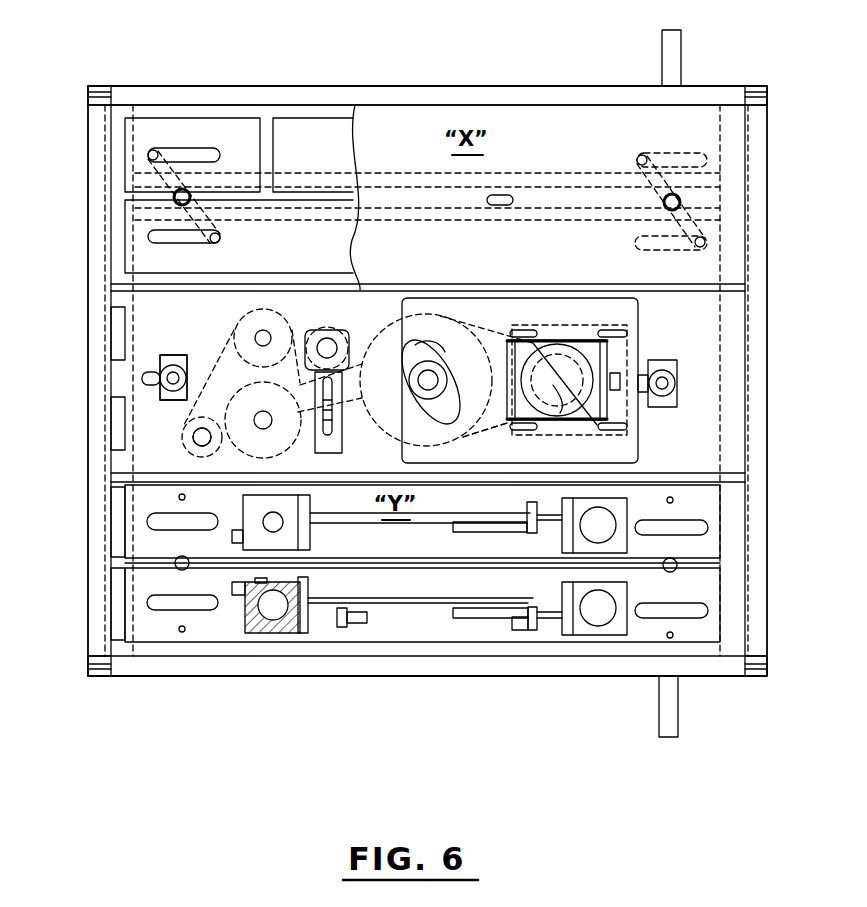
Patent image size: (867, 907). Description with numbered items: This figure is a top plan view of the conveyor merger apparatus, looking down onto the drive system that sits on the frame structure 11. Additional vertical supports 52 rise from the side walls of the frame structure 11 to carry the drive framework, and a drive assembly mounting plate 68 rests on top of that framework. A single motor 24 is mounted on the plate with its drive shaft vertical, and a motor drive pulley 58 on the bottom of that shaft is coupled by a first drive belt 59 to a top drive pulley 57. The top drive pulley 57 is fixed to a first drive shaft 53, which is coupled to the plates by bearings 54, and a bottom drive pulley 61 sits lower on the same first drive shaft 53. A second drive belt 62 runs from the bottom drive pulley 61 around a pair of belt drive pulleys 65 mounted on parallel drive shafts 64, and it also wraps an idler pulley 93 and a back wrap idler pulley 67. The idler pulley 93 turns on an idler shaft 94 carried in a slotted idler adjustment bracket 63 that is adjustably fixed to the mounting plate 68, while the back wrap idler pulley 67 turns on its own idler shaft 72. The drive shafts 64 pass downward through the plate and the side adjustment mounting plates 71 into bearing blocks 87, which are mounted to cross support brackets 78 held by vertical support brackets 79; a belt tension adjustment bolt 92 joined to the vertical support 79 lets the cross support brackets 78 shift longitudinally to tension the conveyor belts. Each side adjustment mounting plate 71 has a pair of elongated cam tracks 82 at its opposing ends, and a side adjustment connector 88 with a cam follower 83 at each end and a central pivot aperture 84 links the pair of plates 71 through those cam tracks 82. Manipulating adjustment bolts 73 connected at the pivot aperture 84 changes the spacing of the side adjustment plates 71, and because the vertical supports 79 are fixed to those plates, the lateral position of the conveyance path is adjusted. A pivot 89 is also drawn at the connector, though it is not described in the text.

The frame structure 11 is at (183, 96).
The motor 24 is at (568, 340).
The vertical supports 52 is at (680, 62).
The first drive shaft 53 is at (442, 385).
The bearings 54 is at (448, 348).
The top drive pulley 57 is at (452, 318).
The motor drive pulley 58 is at (578, 428).
The first drive belt 59 is at (490, 425).
The bottom drive pulley 61 is at (462, 432).
The second drive belt 62 is at (171, 358).
The idler adjustment bracket 63 is at (340, 440).
The drive shafts 64 is at (268, 338).
The belt drive pulleys 65 is at (280, 462).
The back wrap idler pulley 67 is at (182, 450).
The drive assembly mounting plate 68 is at (550, 142).
The side adjustment mounting plates 71 is at (315, 150).
The idler shaft 72 is at (205, 446).
The adjustment bolts 73 is at (672, 360).
The cross support brackets 78 is at (425, 533).
The vertical support brackets 79 is at (527, 506).
The cam tracks 82 is at (205, 153).
The cam follower 83 is at (140, 138).
The central pivot aperture 84 is at (208, 210).
The bearing blocks 87 is at (255, 640).
The side adjustment connector 88 is at (605, 515).
The pivot 89 is at (172, 200).
The belt tension adjustment bolt 92 is at (527, 640).
The idler pulley 93 is at (348, 338).
The idler shaft 94 is at (327, 338).